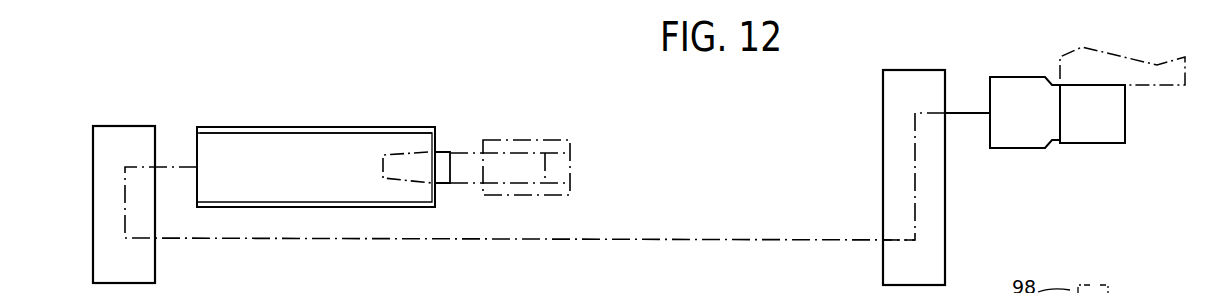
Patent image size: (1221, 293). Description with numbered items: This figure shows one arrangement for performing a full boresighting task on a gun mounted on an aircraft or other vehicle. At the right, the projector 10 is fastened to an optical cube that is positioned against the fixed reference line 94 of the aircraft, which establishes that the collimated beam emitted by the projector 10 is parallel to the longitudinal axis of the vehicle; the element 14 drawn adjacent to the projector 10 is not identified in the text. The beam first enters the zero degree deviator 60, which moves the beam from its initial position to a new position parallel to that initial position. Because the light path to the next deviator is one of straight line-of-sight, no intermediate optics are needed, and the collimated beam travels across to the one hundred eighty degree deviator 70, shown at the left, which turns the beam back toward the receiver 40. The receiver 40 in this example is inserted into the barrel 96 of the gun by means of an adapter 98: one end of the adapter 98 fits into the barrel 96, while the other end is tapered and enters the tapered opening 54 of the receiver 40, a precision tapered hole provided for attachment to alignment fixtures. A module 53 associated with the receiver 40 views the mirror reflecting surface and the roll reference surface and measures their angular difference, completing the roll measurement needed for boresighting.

The 180 degree deviator 70 is at (80, 184).
The receiver 40 is at (245, 118).
The tapered opening 54 is at (318, 127).
The module 53 is at (408, 152).
The adapter 98 is at (458, 158).
The barrel 96 is at (555, 153).
The zero degree deviator 60 is at (872, 158).
The projector 10 is at (1025, 153).
The chuck 14 is at (1095, 131).
The fixed reference line 94 is at (1060, 79).